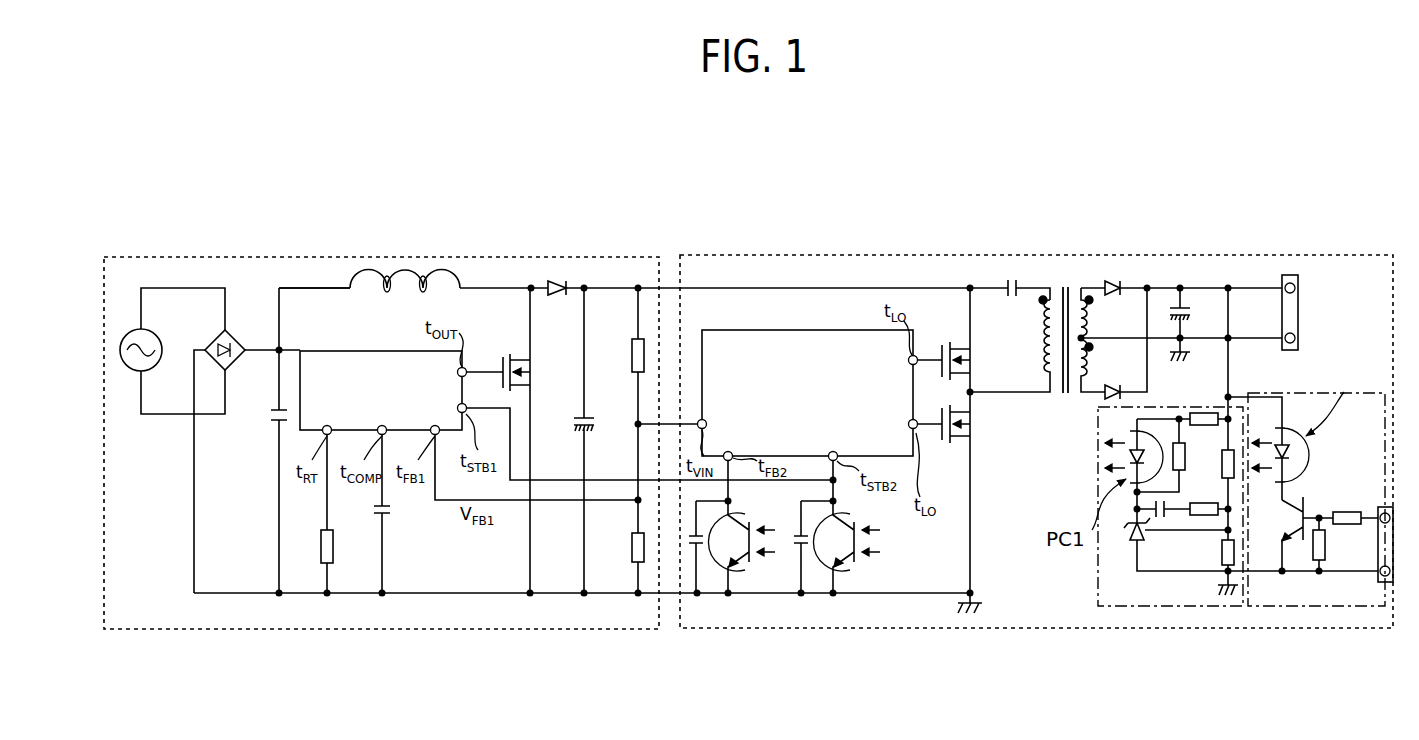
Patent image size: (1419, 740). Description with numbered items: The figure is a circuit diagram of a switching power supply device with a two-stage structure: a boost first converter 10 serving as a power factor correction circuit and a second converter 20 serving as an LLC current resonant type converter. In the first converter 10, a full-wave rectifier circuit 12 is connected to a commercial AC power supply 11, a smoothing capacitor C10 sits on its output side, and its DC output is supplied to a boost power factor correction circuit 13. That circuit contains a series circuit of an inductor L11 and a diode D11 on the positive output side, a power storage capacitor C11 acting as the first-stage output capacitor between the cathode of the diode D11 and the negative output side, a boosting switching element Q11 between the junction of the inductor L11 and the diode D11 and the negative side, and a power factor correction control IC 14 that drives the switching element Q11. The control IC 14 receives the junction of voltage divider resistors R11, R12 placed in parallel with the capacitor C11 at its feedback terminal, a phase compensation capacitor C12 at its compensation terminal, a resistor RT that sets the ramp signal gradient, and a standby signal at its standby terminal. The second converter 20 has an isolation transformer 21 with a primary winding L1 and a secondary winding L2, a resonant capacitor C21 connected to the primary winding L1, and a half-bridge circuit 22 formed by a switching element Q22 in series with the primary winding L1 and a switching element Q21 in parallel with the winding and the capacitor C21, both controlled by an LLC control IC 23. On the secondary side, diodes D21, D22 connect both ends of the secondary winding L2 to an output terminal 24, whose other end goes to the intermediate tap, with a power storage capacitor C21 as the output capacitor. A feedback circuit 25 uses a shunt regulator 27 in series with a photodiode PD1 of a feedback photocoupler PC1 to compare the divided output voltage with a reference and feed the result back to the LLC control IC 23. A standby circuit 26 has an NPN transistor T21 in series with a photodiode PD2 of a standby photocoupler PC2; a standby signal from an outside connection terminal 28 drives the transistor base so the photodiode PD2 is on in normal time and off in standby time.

The first converter 10 is at (215, 257).
The commercial AC power supply 11 is at (136, 372).
The full-wave rectifier circuit 12 is at (240, 330).
The boost power factor correction circuit 13 is at (294, 277).
The power factor correction control IC 14 is at (336, 351).
The second converter 20 is at (828, 255).
The isolation transformer 21 is at (1126, 327).
The half-bridge circuit 22 is at (968, 440).
The LLC control IC 23 is at (745, 330).
The output terminal 24 is at (1290, 275).
The feedback circuit 25 is at (1135, 447).
The standby circuit 26 is at (1310, 515).
The shunt regulator 27 is at (1130, 541).
The outside connection terminal 28 is at (1382, 507).
The inductor L11 is at (428, 279).
The diode D11 is at (557, 280).
The boosting switching element Q11 is at (501, 356).
The smoothing capacitor C10 is at (271, 418).
The power storage capacitor C11 is at (581, 417).
The capacitor C12 is at (391, 512).
The voltage divider resistor R11 is at (629, 350).
The voltage divider resistor R12 is at (633, 545).
The resistor RT is at (320, 545).
The capacitor C21 is at (1008, 279).
The switching element Q21 is at (945, 355).
The switching element Q22 is at (946, 443).
The primary winding L1 is at (1050, 365).
The secondary winding L2 is at (1083, 372).
The diode D21 is at (1112, 280).
The diode D22 is at (1114, 385).
The feedback photocoupler PC1 is at (756, 573).
The standby photocoupler PC2 is at (861, 573).
The photodiode PD1 is at (1151, 451).
The photodiode PD2 is at (1286, 440).
The NPN transistor T21 is at (1306, 500).